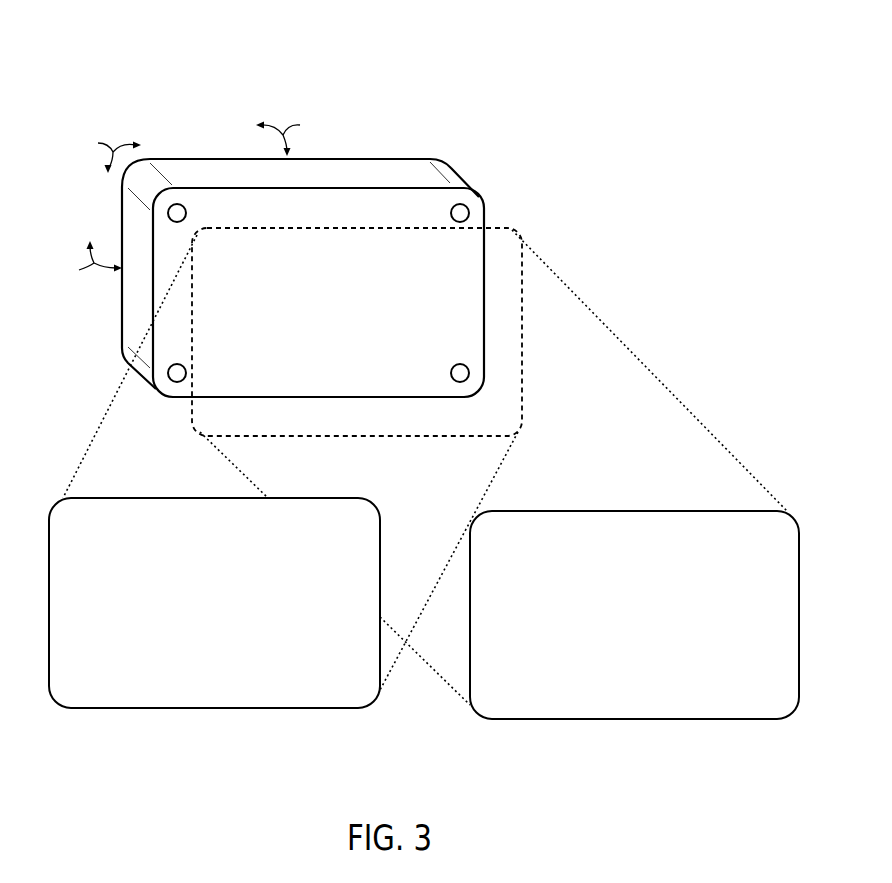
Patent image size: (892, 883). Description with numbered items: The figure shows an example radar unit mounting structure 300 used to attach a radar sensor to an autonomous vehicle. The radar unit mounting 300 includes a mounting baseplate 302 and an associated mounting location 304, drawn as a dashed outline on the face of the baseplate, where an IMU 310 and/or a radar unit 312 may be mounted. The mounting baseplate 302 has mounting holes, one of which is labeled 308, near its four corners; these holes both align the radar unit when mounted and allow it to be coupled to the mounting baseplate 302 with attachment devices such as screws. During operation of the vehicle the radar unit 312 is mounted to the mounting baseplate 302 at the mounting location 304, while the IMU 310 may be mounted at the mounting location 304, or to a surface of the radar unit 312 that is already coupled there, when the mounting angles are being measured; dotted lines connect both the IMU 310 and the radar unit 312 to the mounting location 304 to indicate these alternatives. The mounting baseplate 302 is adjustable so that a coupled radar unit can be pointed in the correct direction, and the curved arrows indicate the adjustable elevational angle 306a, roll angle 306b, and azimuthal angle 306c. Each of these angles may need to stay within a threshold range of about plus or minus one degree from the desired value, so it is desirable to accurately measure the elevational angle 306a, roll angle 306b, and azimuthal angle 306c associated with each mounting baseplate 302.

The radar unit mounting structure 300 is at (218, 74).
The mounting baseplate 302 is at (450, 180).
The mounting location 304 is at (510, 230).
The elevational angle 306a is at (294, 136).
The roll angle 306b is at (103, 153).
The azimuthal angle 306c is at (85, 261).
The mounting hole 308 is at (172, 366).
The IMU 310 is at (252, 616).
The radar unit 312 is at (715, 627).